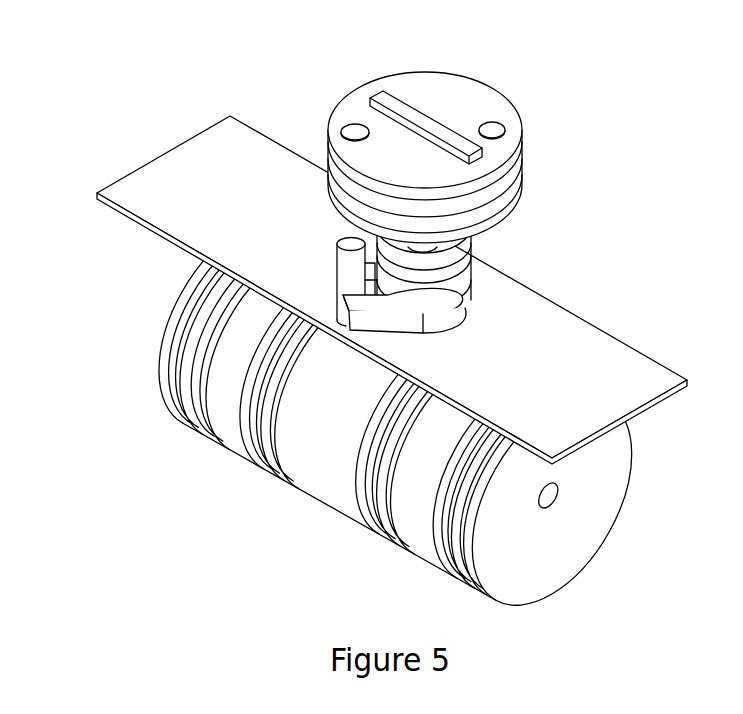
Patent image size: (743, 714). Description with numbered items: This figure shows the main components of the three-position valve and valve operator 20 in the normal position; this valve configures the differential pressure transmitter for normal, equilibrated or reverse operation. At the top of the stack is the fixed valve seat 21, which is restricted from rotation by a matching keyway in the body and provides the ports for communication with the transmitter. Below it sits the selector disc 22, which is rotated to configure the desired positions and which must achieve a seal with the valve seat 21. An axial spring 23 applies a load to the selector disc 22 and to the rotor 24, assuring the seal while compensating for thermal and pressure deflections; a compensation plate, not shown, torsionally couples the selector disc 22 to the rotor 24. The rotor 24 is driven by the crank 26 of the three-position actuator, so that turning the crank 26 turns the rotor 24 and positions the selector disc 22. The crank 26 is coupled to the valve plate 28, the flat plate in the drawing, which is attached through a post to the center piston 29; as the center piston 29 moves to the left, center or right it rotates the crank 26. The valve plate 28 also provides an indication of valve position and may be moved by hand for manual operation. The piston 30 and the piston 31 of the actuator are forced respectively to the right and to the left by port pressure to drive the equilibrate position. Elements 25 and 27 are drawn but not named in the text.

The three-position valve and valve operator 20 is at (120, 64).
The valve seat 21 is at (351, 160).
The selector disc 22 is at (440, 206).
The axial spring 23 is at (438, 222).
The rotor 24 is at (340, 215).
The neck 25 is at (438, 258).
The crank 26 is at (388, 322).
The pin 27 is at (337, 275).
The valve plate 28 is at (548, 353).
The center piston 29 is at (309, 363).
The piston 30 is at (234, 320).
The piston 31 is at (425, 429).